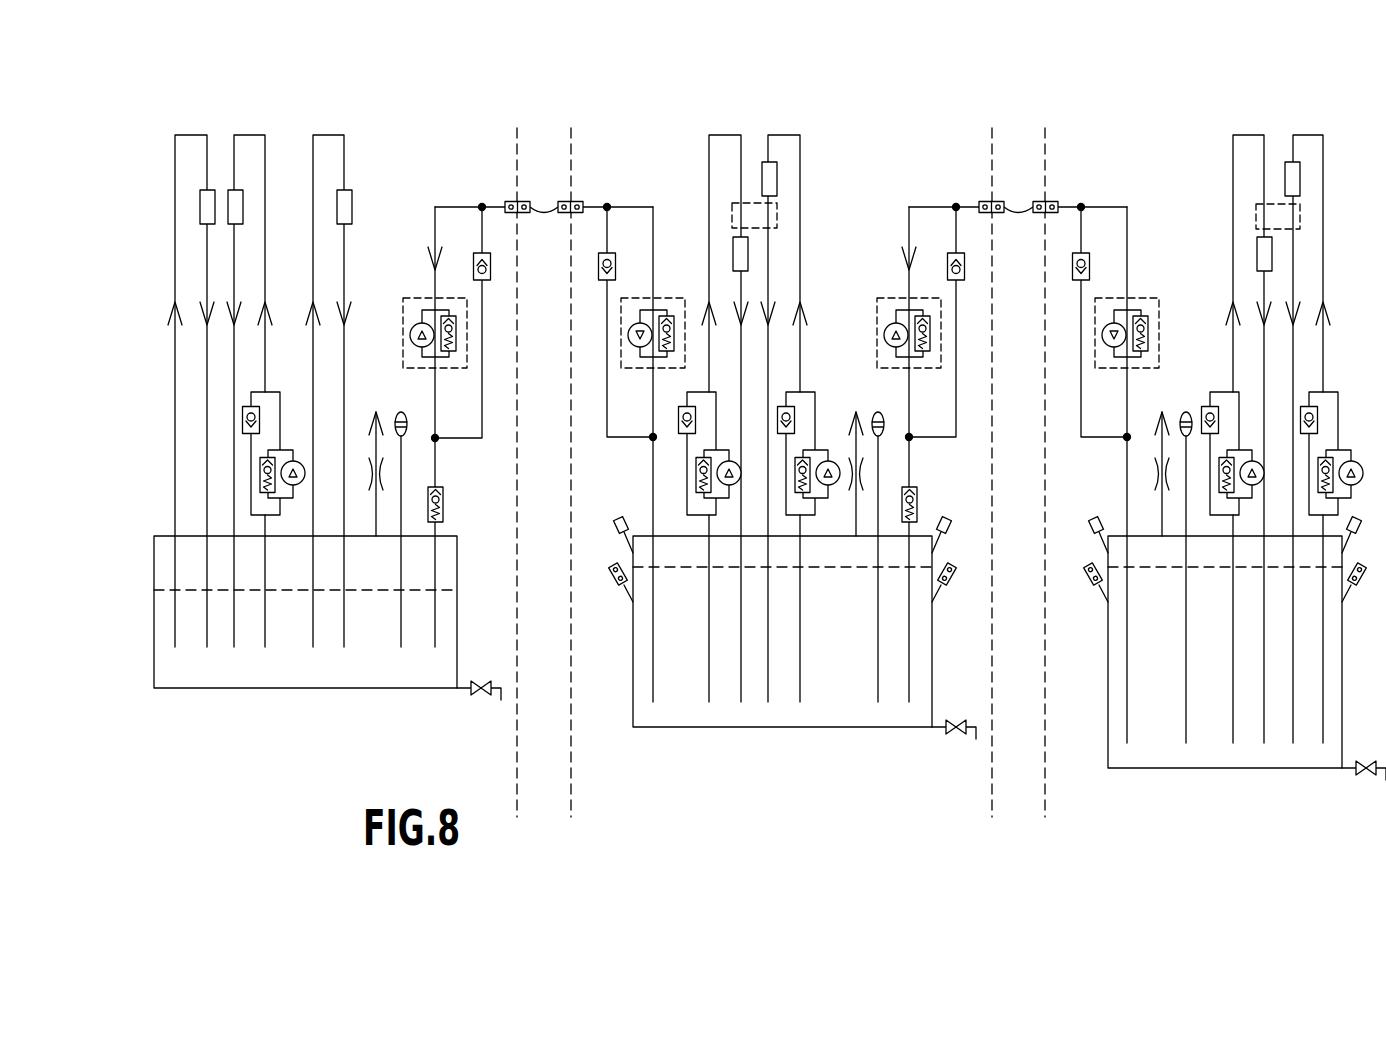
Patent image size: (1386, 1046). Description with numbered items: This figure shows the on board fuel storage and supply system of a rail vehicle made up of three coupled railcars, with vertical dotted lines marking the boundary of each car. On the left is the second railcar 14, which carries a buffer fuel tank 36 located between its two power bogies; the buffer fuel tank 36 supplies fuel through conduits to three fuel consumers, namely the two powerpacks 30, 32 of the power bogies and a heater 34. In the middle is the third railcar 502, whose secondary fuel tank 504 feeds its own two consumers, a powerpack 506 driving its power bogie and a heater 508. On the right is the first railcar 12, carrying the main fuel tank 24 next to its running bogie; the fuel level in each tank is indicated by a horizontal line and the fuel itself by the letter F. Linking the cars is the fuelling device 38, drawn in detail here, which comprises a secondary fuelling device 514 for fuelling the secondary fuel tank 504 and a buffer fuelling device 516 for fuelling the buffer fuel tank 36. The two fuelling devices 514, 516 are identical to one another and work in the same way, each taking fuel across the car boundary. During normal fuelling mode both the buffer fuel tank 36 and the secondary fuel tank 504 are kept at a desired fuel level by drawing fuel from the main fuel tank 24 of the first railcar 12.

The first railcar 12 is at (1230, 495).
The second railcar 14 is at (327, 429).
The main fuel tank 24 is at (1215, 763).
The powerpack 30 is at (242, 200).
The powerpack 32 is at (352, 207).
The heater 34 is at (200, 205).
The buffer fuel tank 36 is at (362, 680).
The fuelling device 38 is at (877, 100).
The third railcar 502 is at (788, 485).
The secondary fuel tank 504 is at (838, 718).
The powerpack 506 is at (777, 180).
The heater 508 is at (733, 248).
The secondary fuelling device 514 is at (973, 183).
The buffer fuelling device 516 is at (592, 178).